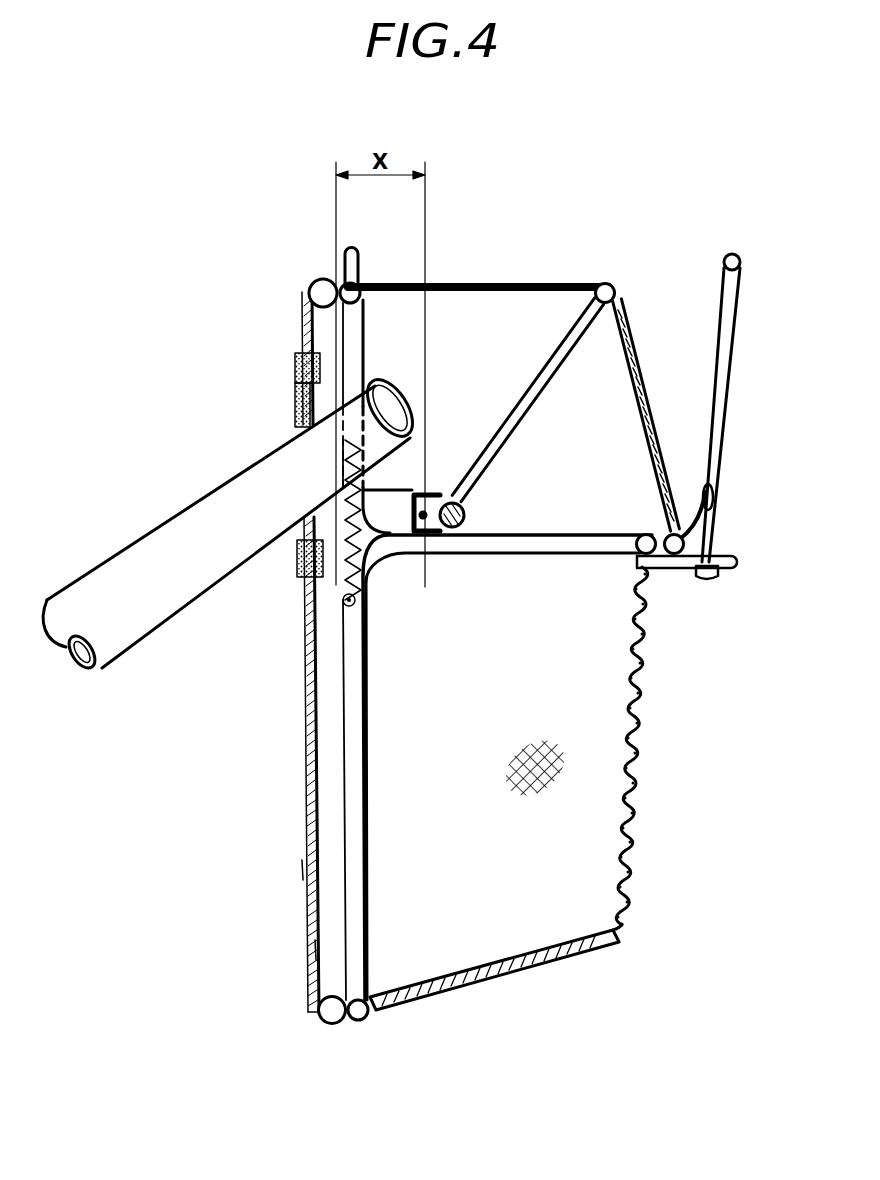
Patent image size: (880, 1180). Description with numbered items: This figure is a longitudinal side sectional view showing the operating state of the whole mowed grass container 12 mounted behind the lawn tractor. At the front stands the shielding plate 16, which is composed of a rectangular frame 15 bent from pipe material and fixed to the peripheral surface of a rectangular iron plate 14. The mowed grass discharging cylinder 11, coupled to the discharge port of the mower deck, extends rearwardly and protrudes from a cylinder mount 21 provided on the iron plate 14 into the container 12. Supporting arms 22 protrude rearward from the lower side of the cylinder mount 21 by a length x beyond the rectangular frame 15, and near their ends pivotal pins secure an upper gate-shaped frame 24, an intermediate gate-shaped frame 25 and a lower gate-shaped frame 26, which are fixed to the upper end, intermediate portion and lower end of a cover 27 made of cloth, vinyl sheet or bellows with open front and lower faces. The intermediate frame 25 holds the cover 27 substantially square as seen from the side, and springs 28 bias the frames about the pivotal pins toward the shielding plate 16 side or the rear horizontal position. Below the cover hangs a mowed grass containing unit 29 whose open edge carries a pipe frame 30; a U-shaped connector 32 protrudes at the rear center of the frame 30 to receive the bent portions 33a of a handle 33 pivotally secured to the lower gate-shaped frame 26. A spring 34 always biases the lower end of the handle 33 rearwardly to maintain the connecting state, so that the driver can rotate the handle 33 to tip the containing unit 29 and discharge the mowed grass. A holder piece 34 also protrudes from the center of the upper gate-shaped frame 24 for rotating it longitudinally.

The mowed grass discharging cylinder 11 is at (197, 586).
The mowed grass container 12 is at (597, 275).
The rectangular iron plate 14 is at (303, 765).
The rectangular frame 15 is at (326, 948).
The shielding plate 16 is at (317, 870).
The cylinder mount 21 is at (301, 556).
The supporting arm 22 is at (382, 503).
The upper gate-shaped frame 24 is at (511, 380).
The intermediate gate-shaped frame 25 is at (538, 402).
The lower gate-shaped frame 26 is at (463, 515).
The cover 27 is at (482, 283).
The spring 28 is at (358, 586).
The mowed grass containing unit 29 is at (633, 830).
The frame 30 is at (353, 873).
The U-shaped connector 32 is at (737, 556).
The handle 33 is at (723, 415).
The bent portion 33a is at (708, 578).
The spring 34 is at (747, 490).